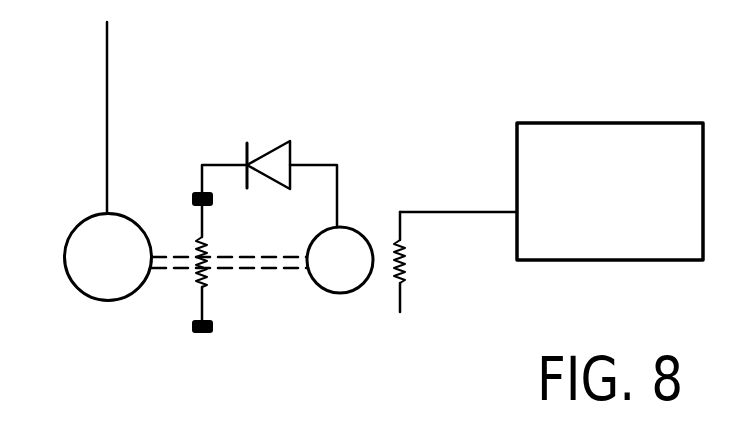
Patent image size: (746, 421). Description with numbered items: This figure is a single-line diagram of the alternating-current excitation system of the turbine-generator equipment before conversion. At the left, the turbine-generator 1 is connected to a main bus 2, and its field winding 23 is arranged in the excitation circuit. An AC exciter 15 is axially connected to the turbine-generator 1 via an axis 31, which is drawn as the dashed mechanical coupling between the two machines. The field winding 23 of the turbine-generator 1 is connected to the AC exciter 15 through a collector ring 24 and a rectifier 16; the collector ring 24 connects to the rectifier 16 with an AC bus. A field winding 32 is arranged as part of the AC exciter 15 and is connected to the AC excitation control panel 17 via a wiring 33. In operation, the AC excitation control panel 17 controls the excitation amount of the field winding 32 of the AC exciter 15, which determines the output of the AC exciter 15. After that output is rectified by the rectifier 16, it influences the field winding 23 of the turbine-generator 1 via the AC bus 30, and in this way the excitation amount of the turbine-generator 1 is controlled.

The turbine-generator 1 is at (65, 253).
The main bus 2 is at (105, 63).
The AC exciter 15 is at (340, 293).
The rectifier 16 is at (263, 153).
The AC excitation control panel 17 is at (603, 122).
The field winding 23 is at (203, 282).
The collector ring 24 is at (195, 198).
The AC bus 30 is at (220, 163).
The axis 31 is at (283, 269).
The field winding 32 is at (407, 262).
The wiring 33 is at (418, 210).